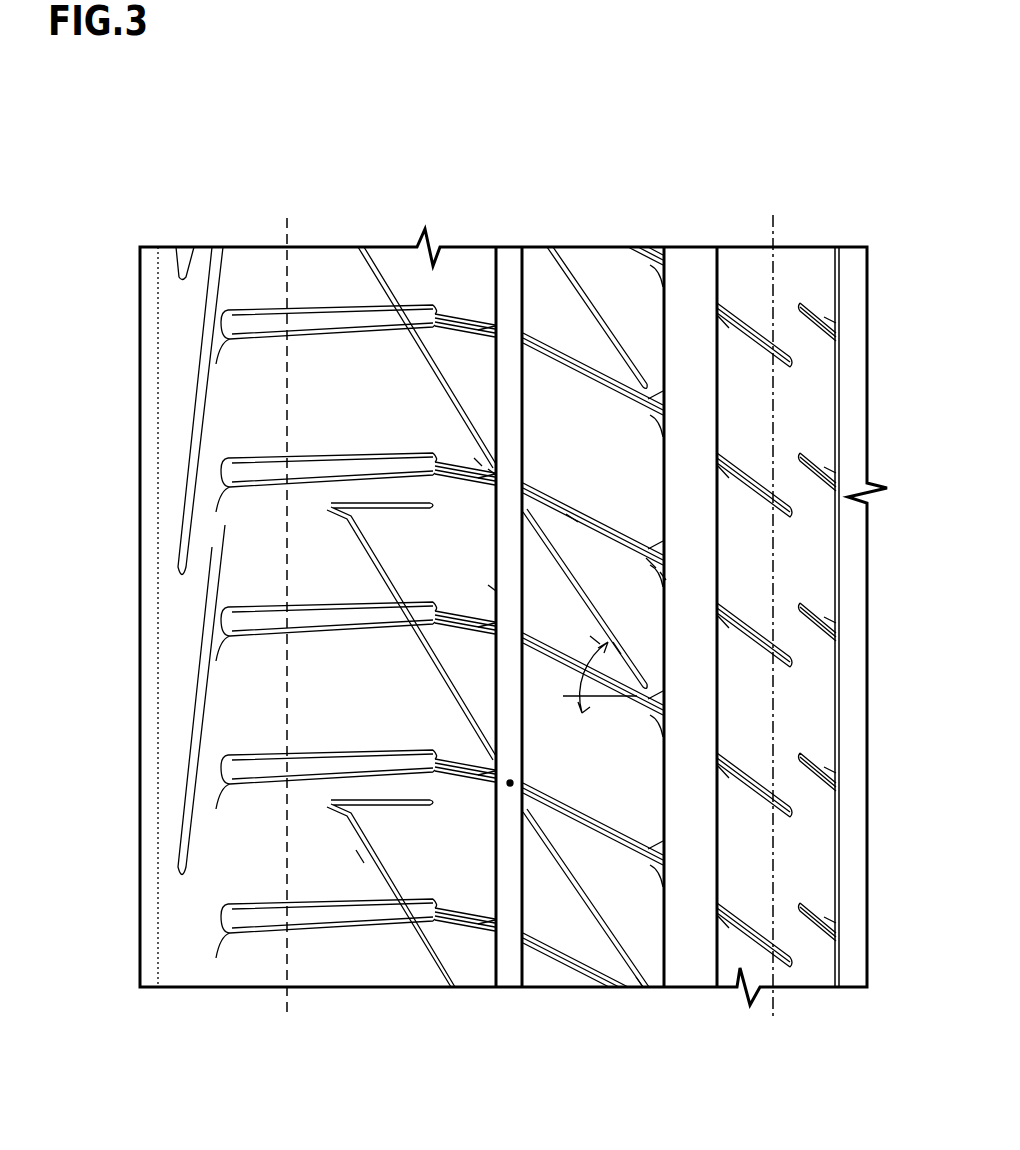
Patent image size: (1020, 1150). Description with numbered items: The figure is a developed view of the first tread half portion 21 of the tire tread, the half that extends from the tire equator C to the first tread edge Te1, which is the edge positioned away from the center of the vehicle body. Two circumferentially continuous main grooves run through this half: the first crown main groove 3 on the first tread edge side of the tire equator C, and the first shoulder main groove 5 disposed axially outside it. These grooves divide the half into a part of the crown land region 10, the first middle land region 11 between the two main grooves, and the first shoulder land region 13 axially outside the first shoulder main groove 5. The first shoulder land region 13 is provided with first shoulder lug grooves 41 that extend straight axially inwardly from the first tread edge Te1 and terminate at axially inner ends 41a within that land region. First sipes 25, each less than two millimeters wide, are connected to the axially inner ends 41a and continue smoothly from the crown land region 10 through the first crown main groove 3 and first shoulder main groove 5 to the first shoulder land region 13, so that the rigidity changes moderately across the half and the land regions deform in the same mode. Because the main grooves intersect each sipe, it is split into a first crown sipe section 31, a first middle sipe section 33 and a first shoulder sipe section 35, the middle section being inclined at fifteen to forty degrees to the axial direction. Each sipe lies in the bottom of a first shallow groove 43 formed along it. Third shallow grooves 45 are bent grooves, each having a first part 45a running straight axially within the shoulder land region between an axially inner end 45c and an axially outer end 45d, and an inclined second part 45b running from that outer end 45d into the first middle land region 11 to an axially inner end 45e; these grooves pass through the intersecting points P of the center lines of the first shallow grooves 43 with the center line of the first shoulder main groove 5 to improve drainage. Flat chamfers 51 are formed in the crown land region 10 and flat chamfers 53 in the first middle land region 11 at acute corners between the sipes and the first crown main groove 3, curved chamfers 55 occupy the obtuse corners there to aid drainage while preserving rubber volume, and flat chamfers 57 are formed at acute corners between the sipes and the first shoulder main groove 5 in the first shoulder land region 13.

The first tread half portion 21 is at (546, 137).
The first tread edge Te1 is at (272, 247).
The tire equator C is at (773, 601).
The first shoulder main groove 5 is at (513, 270).
The first crown main groove 3 is at (694, 275).
The first shoulder land region 13 is at (400, 260).
The first middle land region 11 is at (651, 626).
The crown land region 10 is at (813, 272).
The first shoulder lug grooves 41 is at (327, 912).
The axially inner ends of the first shoulder lug grooves 41a is at (466, 906).
The first sipes 25 is at (80, 487).
The first crown sipe section 31 is at (493, 588).
The first middle sipe section 33 is at (572, 518).
The first shoulder sipe section 35 is at (493, 472).
The flat chamfers 57 is at (478, 462).
The first shallow grooves 43 is at (605, 528).
The third shallow grooves 45 is at (586, 904).
The first part 45a is at (435, 753).
The second part 45b is at (360, 857).
The axially inner end 45c is at (490, 768).
The axially outer end 45d is at (335, 815).
The axially inner end 45e is at (640, 985).
The flat chamfers 51 is at (617, 648).
The flat chamfers 53 is at (650, 565).
The curved chamfers 55 is at (665, 575).
The intersecting points P is at (510, 783).